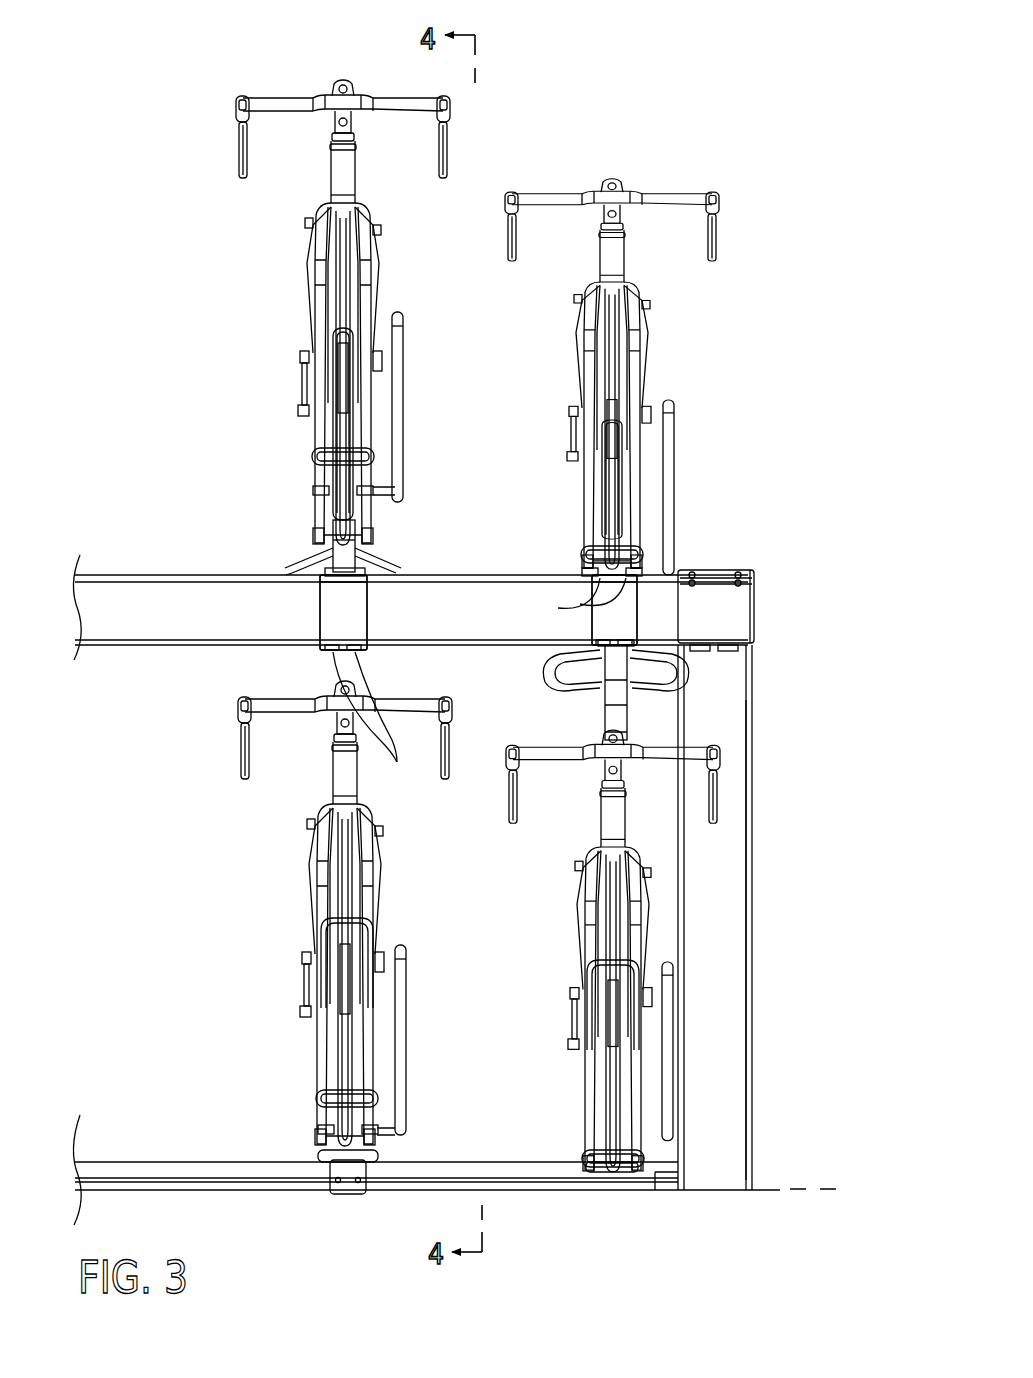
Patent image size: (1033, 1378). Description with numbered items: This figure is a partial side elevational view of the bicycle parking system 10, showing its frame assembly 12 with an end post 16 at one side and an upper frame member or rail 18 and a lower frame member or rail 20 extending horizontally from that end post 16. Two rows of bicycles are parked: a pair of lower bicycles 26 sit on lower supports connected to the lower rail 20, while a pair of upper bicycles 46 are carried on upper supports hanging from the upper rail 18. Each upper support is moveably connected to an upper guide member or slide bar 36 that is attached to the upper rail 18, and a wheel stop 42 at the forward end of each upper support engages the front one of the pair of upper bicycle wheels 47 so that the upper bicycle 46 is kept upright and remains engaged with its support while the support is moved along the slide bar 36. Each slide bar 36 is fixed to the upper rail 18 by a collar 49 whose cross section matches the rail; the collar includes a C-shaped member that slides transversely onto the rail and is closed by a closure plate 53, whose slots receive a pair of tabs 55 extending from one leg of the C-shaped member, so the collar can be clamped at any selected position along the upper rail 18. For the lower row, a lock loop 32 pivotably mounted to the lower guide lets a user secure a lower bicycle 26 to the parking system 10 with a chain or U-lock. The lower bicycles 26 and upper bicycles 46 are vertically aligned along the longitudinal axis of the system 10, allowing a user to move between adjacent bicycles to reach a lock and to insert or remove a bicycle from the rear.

The bicycle parking system 10 is at (800, 562).
The frame assembly 12 is at (767, 822).
The end post 16 is at (744, 924).
The upper frame member or rail 18 is at (141, 632).
The lower frame member or rail 20 is at (147, 1162).
The bicycle 26 is at (298, 843).
The lock loop 32 is at (406, 1015).
The upper guide member or slide bar 36 is at (346, 562).
The wheel stop 42 is at (343, 322).
The upper bicycle 46 is at (288, 97).
The upper bicycle wheels 47 is at (344, 283).
The collar 49 is at (312, 611).
The closure plate 53 is at (368, 618).
The tabs 55 is at (560, 608).